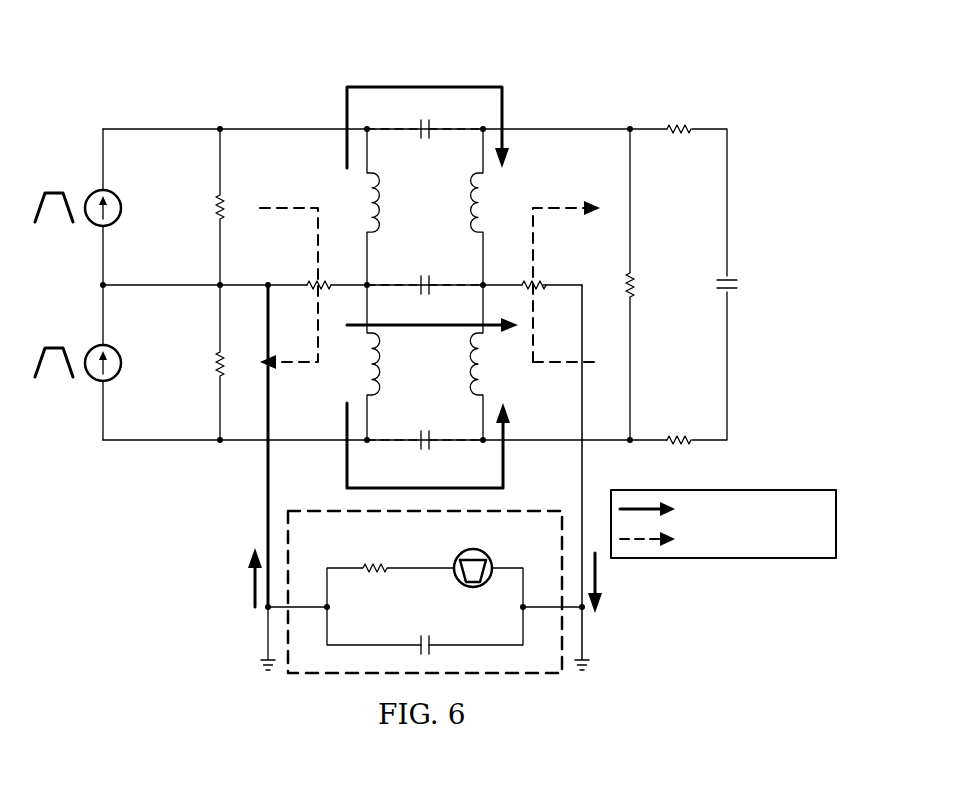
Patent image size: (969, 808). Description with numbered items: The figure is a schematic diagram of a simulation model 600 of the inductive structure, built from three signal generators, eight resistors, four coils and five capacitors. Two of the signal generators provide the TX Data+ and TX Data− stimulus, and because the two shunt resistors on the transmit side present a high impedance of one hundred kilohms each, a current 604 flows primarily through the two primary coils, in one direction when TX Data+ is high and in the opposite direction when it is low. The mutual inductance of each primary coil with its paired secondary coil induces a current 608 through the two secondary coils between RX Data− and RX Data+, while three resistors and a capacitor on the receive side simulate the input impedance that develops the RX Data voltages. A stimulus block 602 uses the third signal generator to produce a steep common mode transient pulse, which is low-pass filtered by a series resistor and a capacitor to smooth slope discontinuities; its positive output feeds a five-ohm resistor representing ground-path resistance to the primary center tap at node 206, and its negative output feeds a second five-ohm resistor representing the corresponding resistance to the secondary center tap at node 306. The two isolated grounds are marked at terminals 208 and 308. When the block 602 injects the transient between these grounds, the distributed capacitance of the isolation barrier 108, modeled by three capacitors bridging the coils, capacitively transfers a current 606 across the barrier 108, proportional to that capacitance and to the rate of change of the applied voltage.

The simulation model 600 is at (295, 90).
The isolation barrier 108 is at (483, 80).
The transferred current 606 is at (503, 112).
The current 604 is at (290, 206).
The induced current 608 is at (557, 205).
The node 206 is at (368, 282).
The node 306 is at (482, 282).
The primary ground terminal 208 is at (268, 636).
The secondary ground terminal 308 is at (582, 635).
The stimulus block 602 is at (336, 680).